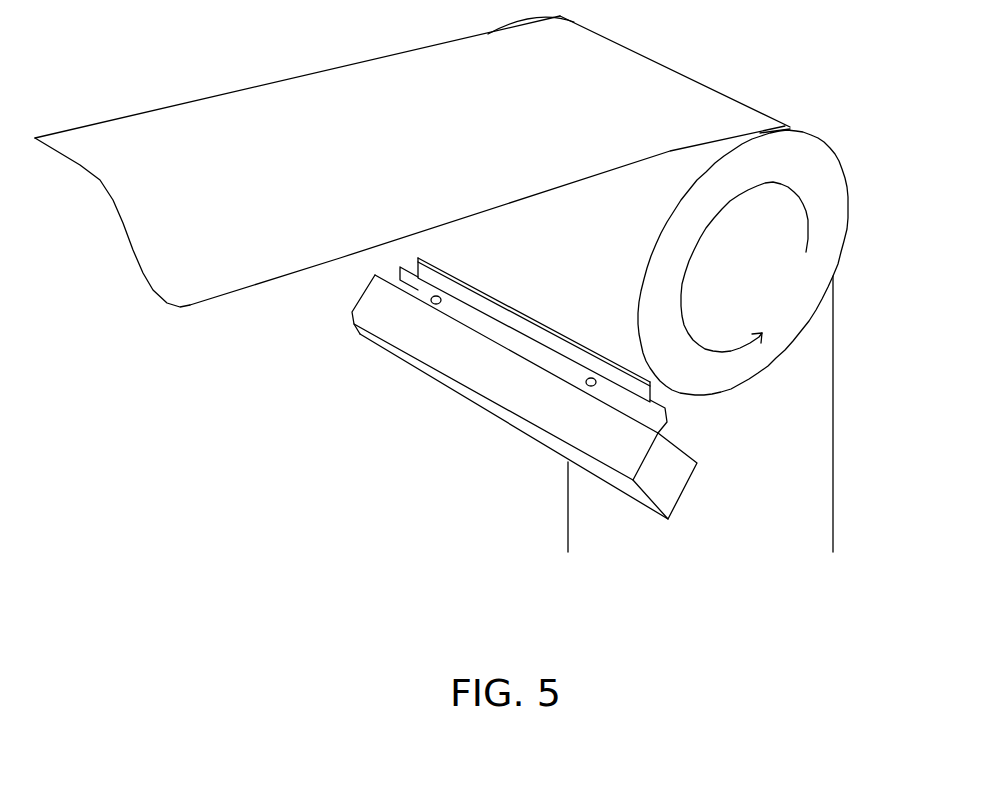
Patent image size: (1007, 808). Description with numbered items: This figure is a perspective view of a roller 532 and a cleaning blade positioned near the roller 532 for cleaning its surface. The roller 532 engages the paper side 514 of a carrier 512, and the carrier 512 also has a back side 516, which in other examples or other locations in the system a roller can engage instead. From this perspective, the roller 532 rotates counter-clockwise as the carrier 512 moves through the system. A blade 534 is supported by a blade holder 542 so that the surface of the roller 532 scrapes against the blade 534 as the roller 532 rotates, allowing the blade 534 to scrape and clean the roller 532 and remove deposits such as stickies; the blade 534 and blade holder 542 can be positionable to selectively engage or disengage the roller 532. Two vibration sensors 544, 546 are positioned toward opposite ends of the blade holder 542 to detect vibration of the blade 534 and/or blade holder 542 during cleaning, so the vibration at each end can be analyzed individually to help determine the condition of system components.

The carrier 512 is at (675, 95).
The paper side 514 is at (778, 453).
The back side 516 is at (346, 171).
The roller 532 is at (768, 285).
The blade 534 is at (483, 296).
The blade holder 542 is at (492, 368).
The vibration sensor 544 is at (432, 300).
The vibration sensor 546 is at (586, 383).